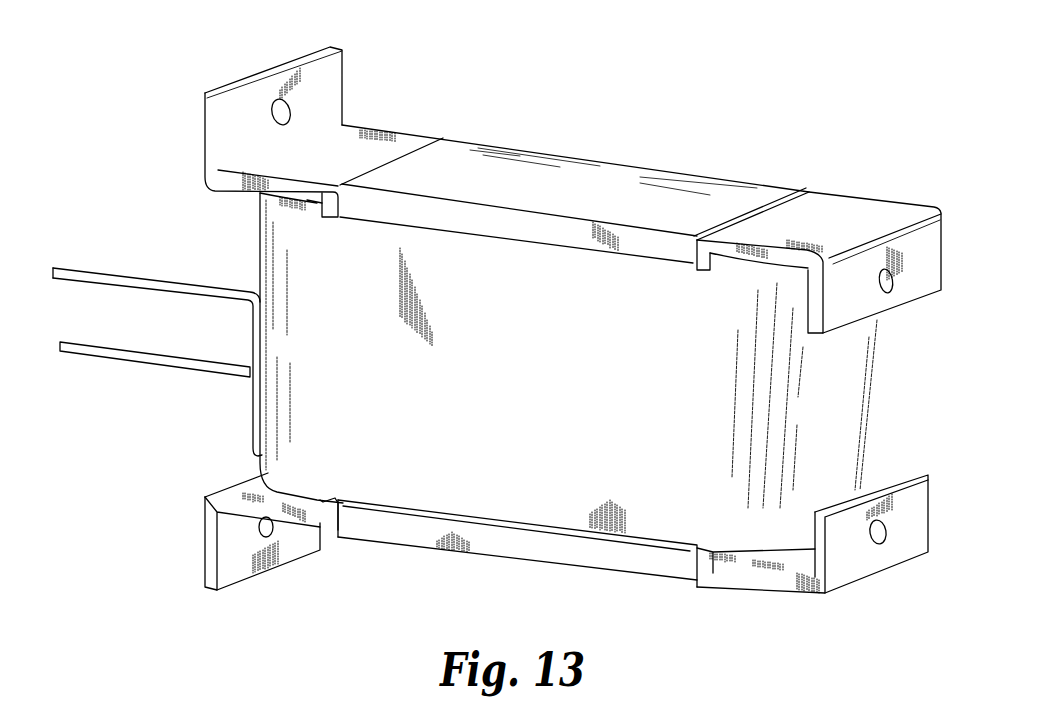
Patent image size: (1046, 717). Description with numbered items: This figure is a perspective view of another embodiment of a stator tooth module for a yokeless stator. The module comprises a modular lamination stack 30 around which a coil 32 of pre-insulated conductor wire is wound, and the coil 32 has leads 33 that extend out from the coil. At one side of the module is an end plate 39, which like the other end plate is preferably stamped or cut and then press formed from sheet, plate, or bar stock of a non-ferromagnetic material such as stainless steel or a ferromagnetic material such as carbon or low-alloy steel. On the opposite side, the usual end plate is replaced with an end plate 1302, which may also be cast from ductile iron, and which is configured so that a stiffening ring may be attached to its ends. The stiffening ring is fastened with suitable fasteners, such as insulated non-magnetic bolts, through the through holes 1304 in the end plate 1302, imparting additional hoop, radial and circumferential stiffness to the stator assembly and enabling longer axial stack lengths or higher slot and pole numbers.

The modular lamination stack 30 is at (695, 177).
The coil 32 is at (560, 485).
The leads 33 is at (120, 284).
The end plate 39 is at (210, 555).
The end plate 1302 is at (770, 587).
The through holes 1304 is at (878, 530).